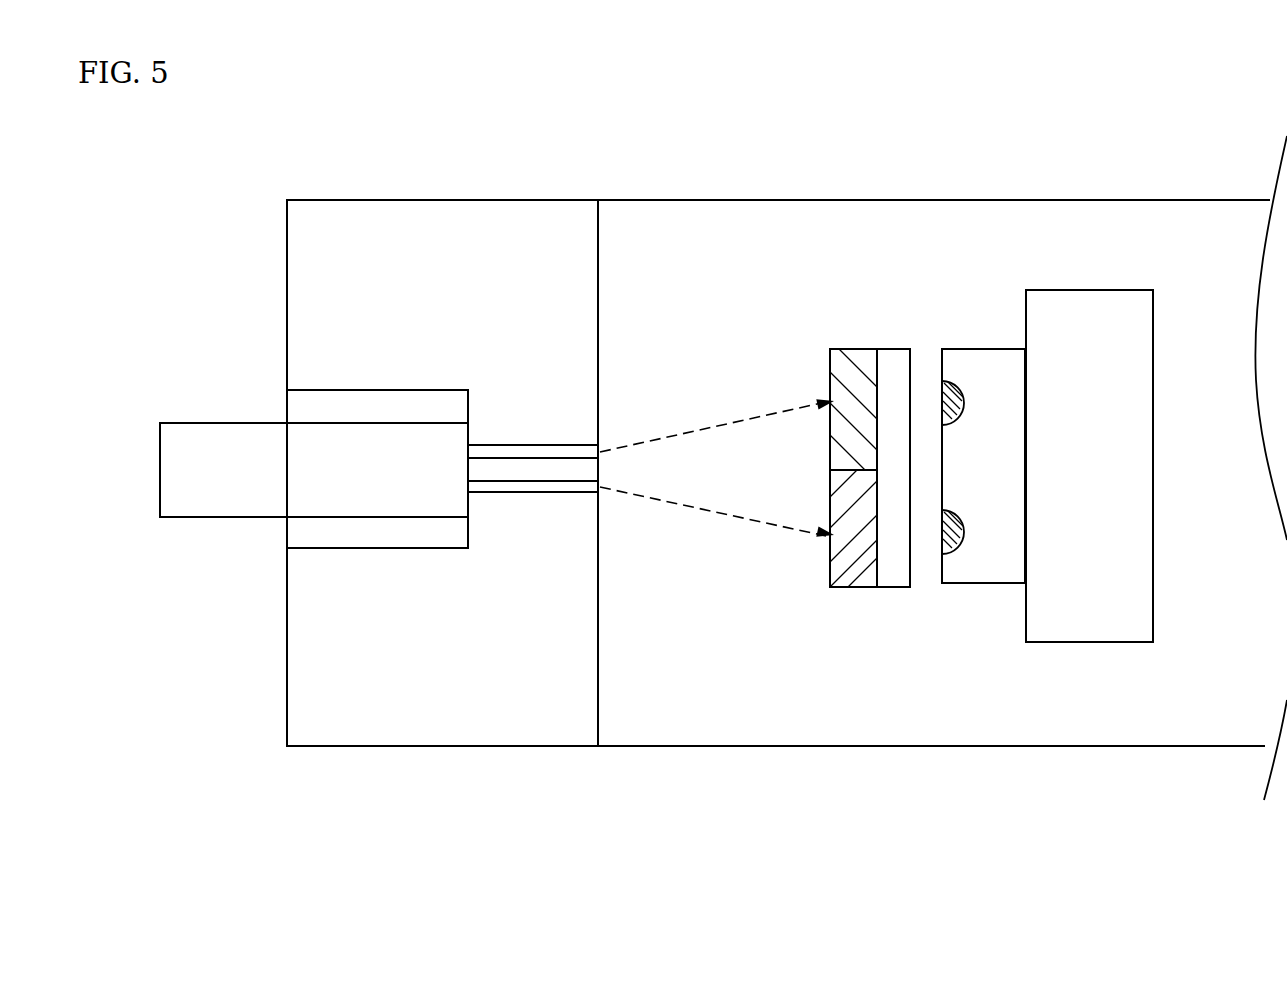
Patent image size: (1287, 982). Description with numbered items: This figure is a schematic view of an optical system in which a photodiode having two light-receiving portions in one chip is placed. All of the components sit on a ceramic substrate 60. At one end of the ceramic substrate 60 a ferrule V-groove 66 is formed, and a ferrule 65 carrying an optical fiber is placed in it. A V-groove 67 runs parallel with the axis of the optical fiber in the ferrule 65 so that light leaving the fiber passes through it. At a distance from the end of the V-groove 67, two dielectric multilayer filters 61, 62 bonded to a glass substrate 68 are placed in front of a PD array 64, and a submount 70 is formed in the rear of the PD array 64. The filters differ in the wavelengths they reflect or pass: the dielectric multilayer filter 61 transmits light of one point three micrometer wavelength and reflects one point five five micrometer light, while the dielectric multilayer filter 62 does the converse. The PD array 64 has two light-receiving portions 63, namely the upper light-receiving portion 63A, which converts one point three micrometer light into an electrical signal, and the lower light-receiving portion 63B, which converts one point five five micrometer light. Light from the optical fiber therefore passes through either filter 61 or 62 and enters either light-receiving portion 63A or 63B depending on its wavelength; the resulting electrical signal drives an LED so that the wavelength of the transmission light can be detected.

The ceramic substrate 60 is at (560, 200).
The dielectric multilayer filter 61 is at (852, 383).
The dielectric multilayer filter 62 is at (850, 555).
The light-receiving portions 63 is at (1075, 845).
The upper light-receiving portion 63A is at (967, 412).
The lower light-receiving portion 63B is at (950, 553).
The PD array 64 is at (987, 349).
The ferrule 65 is at (228, 423).
The ferrule V-groove 66 is at (355, 410).
The V-groove 67 is at (530, 487).
The glass substrate 68 is at (895, 349).
The submount 70 is at (1135, 290).